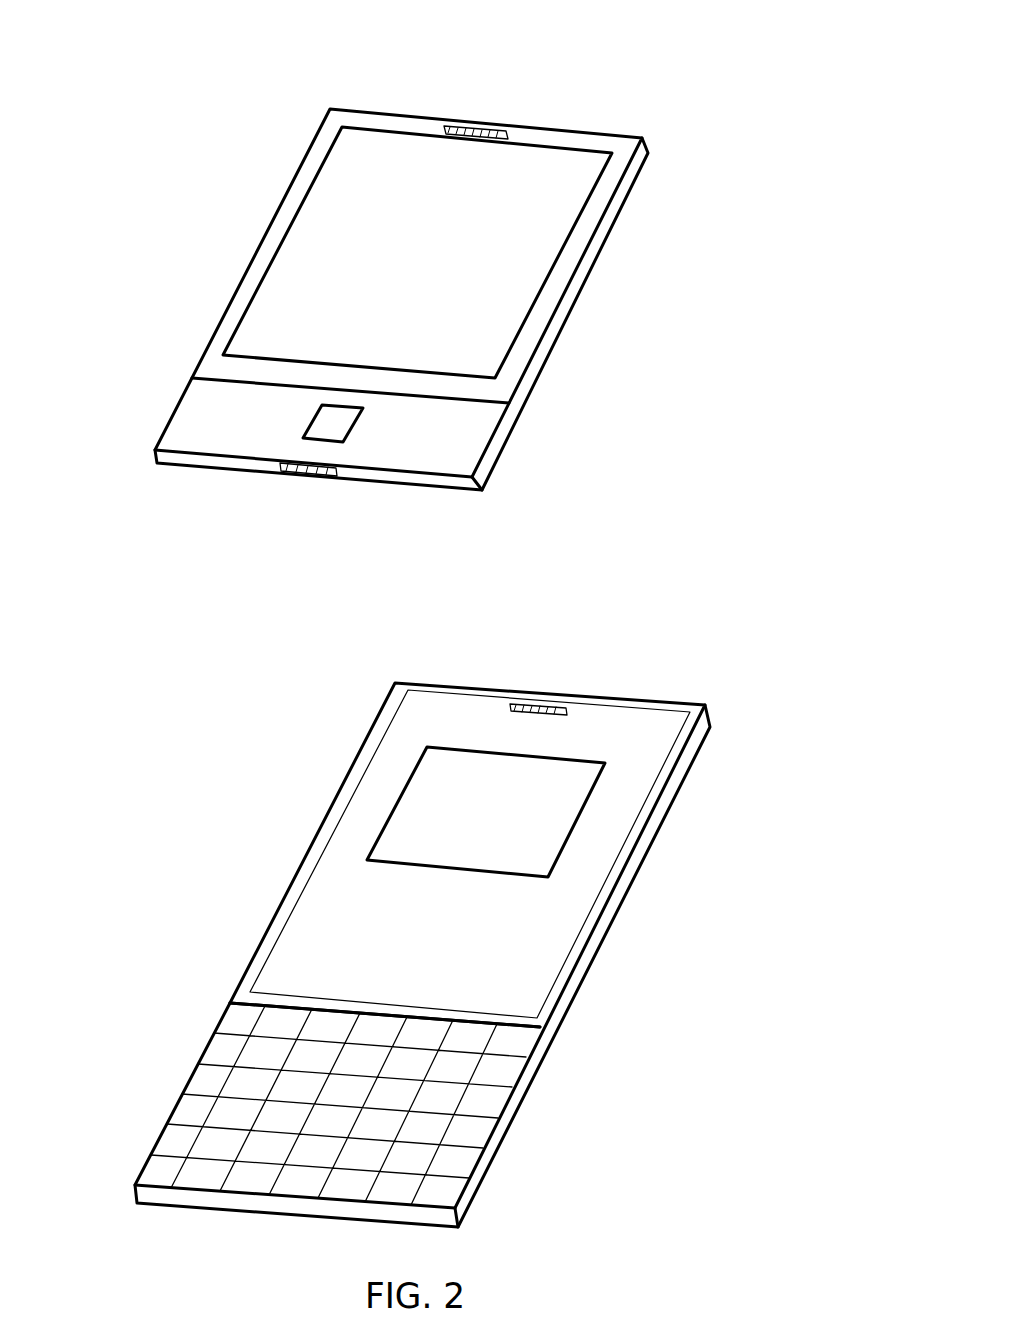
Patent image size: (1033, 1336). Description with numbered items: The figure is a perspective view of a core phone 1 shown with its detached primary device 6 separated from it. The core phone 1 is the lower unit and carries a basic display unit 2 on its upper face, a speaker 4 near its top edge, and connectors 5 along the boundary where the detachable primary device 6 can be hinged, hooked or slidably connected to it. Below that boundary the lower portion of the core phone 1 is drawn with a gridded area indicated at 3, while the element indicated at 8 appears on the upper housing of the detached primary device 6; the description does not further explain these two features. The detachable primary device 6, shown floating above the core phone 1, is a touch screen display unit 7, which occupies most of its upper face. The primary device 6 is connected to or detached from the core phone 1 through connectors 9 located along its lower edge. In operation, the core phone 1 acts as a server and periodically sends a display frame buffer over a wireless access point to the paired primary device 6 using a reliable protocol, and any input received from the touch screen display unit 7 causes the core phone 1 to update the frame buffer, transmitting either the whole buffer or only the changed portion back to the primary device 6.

The core phone 1 is at (265, 858).
The basic display unit 2 is at (562, 822).
The keyboard 3 is at (425, 1153).
The speaker 4 is at (553, 703).
The connectors 5 is at (390, 1007).
The detachable primary device 6 is at (237, 237).
The touch screen display unit 7 is at (510, 319).
The speaker 8 is at (485, 125).
The connectors 9 is at (313, 472).